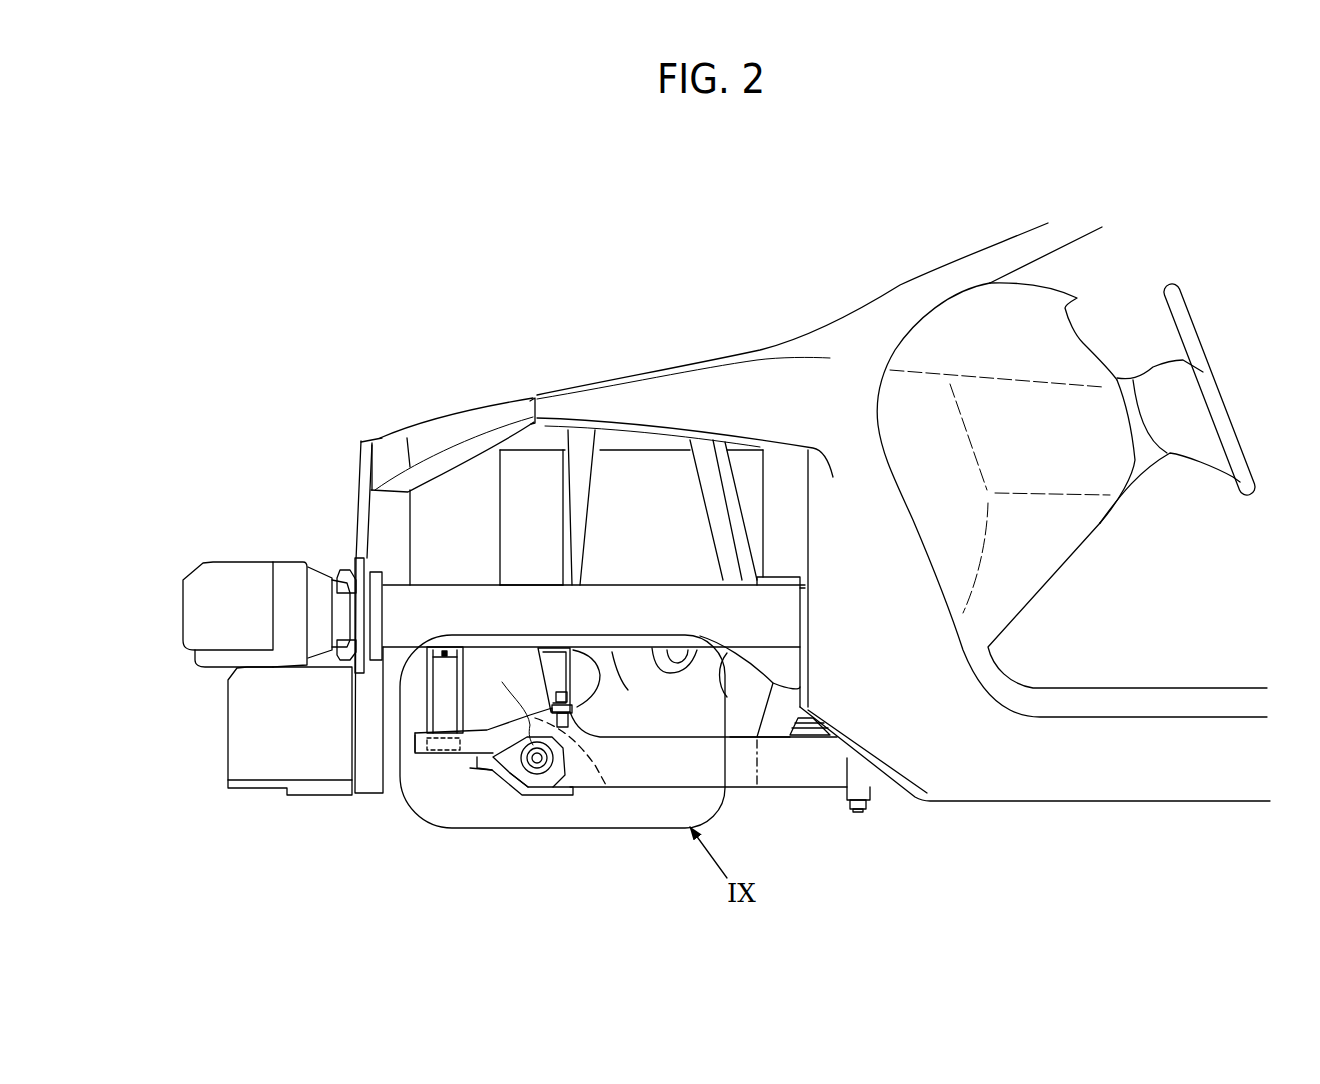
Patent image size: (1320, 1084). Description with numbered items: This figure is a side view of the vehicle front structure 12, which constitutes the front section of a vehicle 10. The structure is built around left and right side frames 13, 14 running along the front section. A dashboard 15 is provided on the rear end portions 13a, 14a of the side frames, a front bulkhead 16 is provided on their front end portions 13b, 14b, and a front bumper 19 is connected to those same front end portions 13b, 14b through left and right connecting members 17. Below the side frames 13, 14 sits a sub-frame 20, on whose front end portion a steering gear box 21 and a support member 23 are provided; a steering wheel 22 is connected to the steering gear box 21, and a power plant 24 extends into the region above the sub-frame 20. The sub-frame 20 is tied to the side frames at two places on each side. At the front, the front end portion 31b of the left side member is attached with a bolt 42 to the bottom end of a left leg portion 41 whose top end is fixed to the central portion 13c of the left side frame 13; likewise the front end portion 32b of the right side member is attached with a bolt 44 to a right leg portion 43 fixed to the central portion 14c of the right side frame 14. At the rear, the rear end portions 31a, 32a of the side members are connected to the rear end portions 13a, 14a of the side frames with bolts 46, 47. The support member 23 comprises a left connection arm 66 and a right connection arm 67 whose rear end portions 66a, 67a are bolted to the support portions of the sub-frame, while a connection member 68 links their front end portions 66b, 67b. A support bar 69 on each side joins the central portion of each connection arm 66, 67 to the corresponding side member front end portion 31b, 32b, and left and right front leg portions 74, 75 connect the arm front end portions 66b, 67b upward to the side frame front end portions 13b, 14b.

The vehicle 10 is at (795, 208).
The vehicle front structure 12 is at (711, 340).
The left side frame 13 is at (595, 578).
The right side frame 14 is at (617, 595).
The rear end portion of left side frame 13a is at (845, 746).
The rear end portion of right side frame 14a is at (863, 763).
The front end portion of left side frame 13b is at (319, 705).
The front end portion of right side frame 14b is at (410, 615).
The central portion of left side frame 13c is at (517, 555).
The central portion of right side frame 14c is at (548, 595).
The dashboard 15 is at (853, 627).
The front bulkhead 16 is at (360, 441).
The connecting member 17 is at (337, 595).
The front bumper 19 is at (198, 613).
The sub-frame 20 is at (657, 795).
The steering gear box 21 is at (530, 800).
The steering wheel 22 is at (1210, 385).
The support member 23 is at (463, 760).
The power plant 24 is at (516, 465).
The rear end portion of left side member 31a is at (926, 772).
The rear end portion of right side member 32a is at (863, 788).
The front end portion of left side member 31b is at (629, 709).
The front end portion of right side member 32b is at (577, 710).
The left leg portion 41 is at (624, 654).
The right leg portion 43 is at (565, 670).
The bolt 42 is at (708, 749).
The bolt 44 is at (572, 725).
The bolt 46 is at (875, 840).
The bolt 47 is at (856, 812).
The left connection arm 66 is at (490, 721).
The right connection arm 67 is at (498, 735).
The rear end portion of left connection arm 66a is at (579, 799).
The rear end portion of right connection arm 67a is at (571, 785).
The front end portion of left connection arm 66b is at (378, 807).
The front end portion of right connection arm 67b is at (415, 750).
The connection member 68 is at (418, 748).
The support bar 69 is at (503, 778).
The left front leg portion 74 is at (365, 704).
The right front leg portion 75 is at (437, 695).